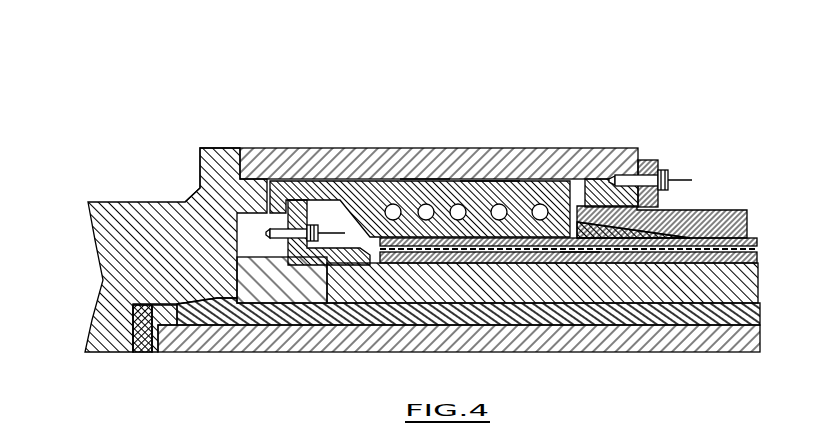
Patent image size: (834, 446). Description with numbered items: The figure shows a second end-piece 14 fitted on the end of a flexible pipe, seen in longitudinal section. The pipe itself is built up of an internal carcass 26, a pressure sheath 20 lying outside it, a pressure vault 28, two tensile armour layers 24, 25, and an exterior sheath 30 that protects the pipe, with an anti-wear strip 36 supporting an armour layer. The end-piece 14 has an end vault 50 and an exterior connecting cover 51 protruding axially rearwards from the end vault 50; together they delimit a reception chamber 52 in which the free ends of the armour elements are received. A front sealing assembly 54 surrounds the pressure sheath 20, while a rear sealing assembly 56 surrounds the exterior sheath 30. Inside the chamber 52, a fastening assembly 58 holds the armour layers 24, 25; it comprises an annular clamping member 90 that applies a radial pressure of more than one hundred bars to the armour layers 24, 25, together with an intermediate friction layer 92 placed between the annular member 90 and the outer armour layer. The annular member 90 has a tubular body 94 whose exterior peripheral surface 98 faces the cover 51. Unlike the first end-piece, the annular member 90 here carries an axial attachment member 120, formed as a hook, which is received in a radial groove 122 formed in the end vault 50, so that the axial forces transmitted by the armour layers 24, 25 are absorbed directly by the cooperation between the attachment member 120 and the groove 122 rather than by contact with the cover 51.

The end-piece 14 is at (634, 117).
The pressure sheath 20 is at (760, 315).
The tensile armour layer 24 is at (758, 258).
The tensile armour layer 25 is at (758, 241).
The internal carcass 26 is at (760, 345).
The pressure vault 28 is at (760, 285).
The exterior sheath 30 is at (676, 236).
The anti-wear strip 36 is at (721, 260).
The end vault 50 is at (123, 230).
The exterior connecting cover 51 is at (362, 158).
The reception chamber 52 is at (335, 200).
The front sealing assembly 54 is at (253, 312).
The rear sealing assembly 56 is at (675, 158).
The fastening assembly 58 is at (554, 168).
The annular clamping member 90 is at (425, 173).
The intermediate friction layer 92 is at (515, 242).
The tubular body 94 is at (576, 245).
The exterior peripheral surface 98 is at (488, 182).
The axial attachment member 120 is at (273, 180).
The radial groove 122 is at (195, 185).